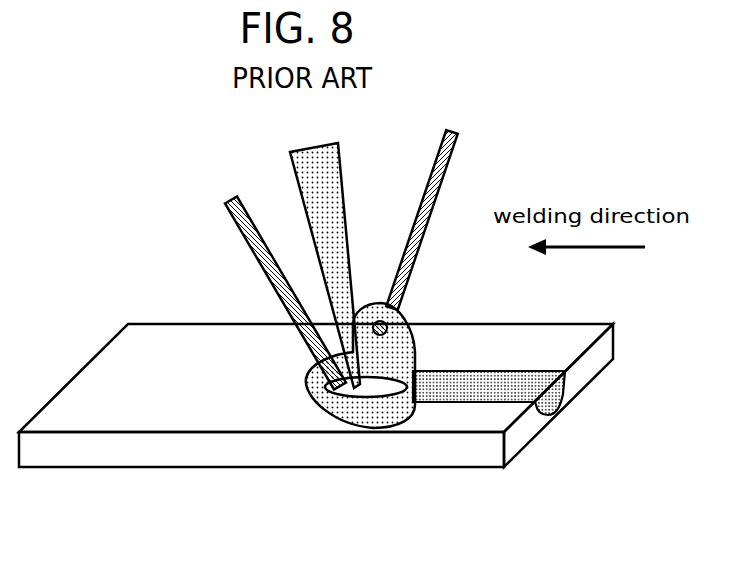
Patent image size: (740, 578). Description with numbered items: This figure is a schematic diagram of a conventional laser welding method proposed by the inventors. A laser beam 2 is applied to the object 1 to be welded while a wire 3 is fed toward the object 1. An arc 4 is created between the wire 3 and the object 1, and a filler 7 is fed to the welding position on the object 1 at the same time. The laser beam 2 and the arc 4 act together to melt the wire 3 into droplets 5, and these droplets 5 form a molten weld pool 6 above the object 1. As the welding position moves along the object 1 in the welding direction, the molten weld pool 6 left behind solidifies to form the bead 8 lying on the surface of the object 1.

The object to be welded 1 is at (113, 365).
The laser beam 2 is at (308, 147).
The wire 3 is at (445, 182).
The arc 4 is at (387, 415).
The droplets 5 is at (387, 324).
The molten weld pool 6 is at (373, 385).
The filler 7 is at (233, 227).
The bead 8 is at (497, 372).